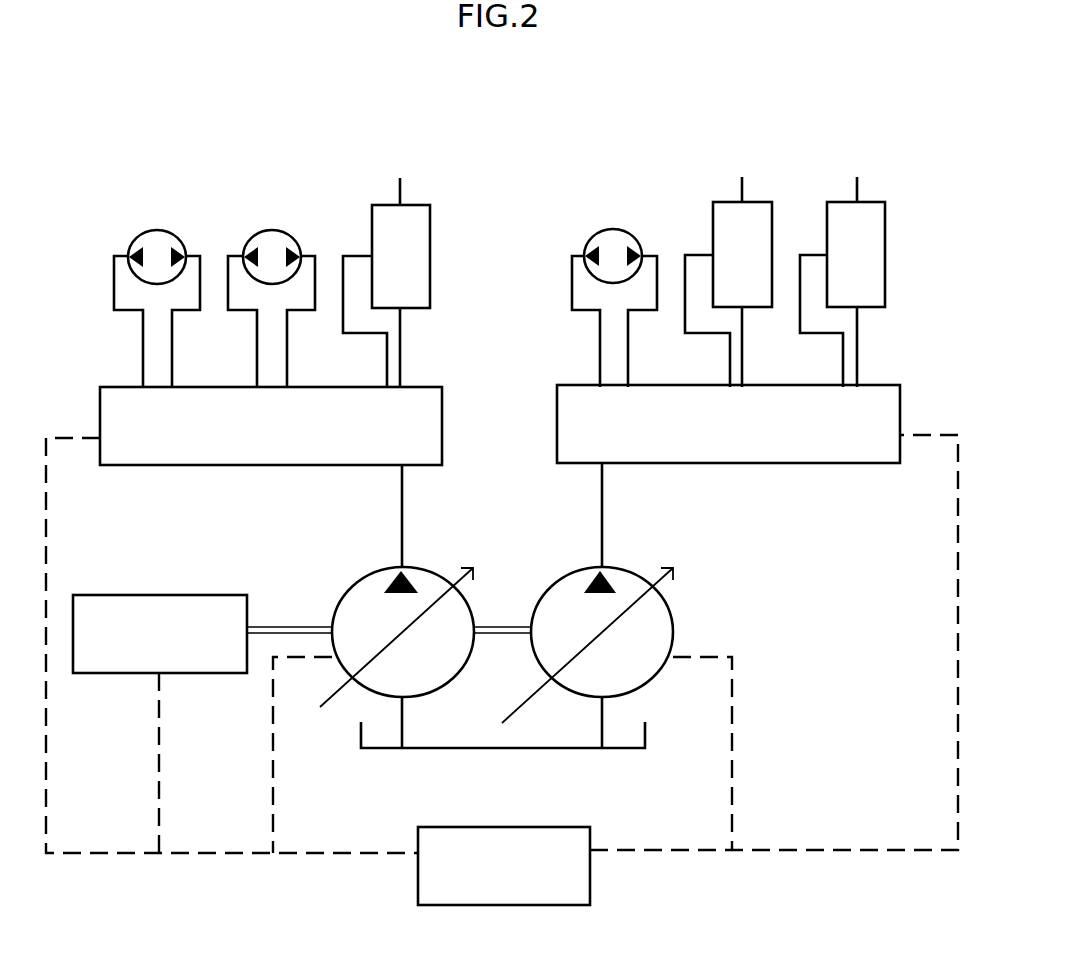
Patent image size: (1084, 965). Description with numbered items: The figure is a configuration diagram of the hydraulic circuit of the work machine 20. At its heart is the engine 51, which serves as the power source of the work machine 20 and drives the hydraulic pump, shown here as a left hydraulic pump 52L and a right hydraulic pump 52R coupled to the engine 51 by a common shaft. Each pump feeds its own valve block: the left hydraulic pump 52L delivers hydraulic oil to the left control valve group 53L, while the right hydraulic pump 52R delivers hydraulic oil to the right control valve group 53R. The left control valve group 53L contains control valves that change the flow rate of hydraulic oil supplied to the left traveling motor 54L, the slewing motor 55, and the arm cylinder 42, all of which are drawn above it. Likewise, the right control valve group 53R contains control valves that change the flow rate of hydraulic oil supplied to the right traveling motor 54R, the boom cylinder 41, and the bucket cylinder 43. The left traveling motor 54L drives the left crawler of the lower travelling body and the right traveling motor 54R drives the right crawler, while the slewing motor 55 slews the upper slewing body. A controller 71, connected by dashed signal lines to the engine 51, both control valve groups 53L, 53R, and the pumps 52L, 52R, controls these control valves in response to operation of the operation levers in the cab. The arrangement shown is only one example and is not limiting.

The work machine 20 is at (866, 133).
The boom cylinder 41 is at (724, 270).
The arm cylinder 42 is at (383, 270).
The bucket cylinder 43 is at (839, 270).
The engine 51 is at (140, 647).
The left hydraulic pump 52L is at (360, 580).
The right hydraulic pump 52R is at (668, 606).
The left control valve group 53L is at (213, 441).
The right control valve group 53R is at (669, 439).
The left traveling motor 54L is at (149, 231).
The right traveling motor 54R is at (603, 230).
The slewing motor 55 is at (264, 231).
The controller 71 is at (485, 880).